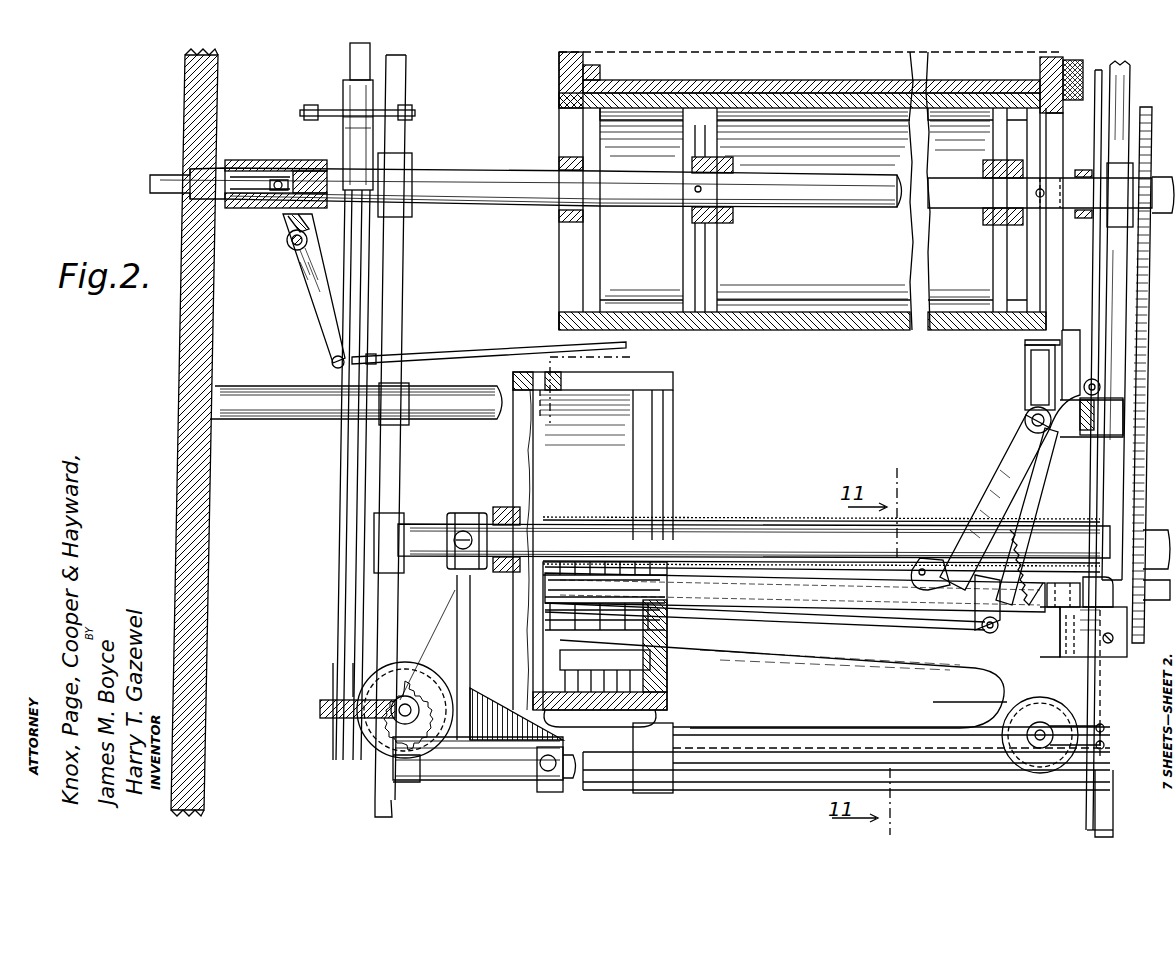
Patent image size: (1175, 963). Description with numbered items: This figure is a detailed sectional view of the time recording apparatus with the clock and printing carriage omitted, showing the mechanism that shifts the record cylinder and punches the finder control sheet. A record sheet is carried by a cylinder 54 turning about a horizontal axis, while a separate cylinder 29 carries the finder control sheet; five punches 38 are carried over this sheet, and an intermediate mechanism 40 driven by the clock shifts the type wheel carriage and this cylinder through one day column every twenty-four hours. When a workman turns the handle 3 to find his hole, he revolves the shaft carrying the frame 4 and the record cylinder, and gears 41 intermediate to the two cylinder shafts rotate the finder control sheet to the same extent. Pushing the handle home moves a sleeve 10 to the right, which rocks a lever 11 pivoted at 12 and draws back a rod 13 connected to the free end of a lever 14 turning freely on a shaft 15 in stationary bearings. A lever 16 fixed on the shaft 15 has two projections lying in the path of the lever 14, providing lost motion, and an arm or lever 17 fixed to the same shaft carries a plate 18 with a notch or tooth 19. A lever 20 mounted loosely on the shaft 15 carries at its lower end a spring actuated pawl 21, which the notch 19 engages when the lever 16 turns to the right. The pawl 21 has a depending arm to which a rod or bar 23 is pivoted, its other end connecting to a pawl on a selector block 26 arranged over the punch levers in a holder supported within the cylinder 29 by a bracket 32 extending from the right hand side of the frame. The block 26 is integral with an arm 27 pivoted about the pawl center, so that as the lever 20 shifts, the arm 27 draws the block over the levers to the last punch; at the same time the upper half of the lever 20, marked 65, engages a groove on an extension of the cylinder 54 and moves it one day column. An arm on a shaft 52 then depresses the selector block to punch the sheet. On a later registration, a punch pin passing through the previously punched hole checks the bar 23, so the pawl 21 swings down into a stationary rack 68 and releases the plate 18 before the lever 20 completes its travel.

The handle 3 is at (283, 147).
The frame 4 is at (743, 357).
The sleeve 10 is at (265, 212).
The lever 11 is at (305, 295).
The pivot 12 is at (287, 246).
The rod 13 is at (497, 352).
The lever 14 is at (1030, 370).
The shaft 15 is at (1025, 418).
The lever 16 is at (1025, 343).
The arm or lever 17 is at (1005, 456).
The plate 18 is at (940, 548).
The notch or tooth 19 is at (980, 628).
The lever 20 is at (1043, 478).
The spring actuated pawl 21 is at (1052, 555).
The rod or bar 23 is at (935, 620).
The selector block 26 is at (1040, 610).
The arm 27 is at (832, 606).
The cylinder 29 is at (662, 380).
The bracket 32 is at (778, 654).
The punches 38 is at (648, 680).
The intermediate mechanism 40 is at (415, 113).
The gears 41 is at (1151, 238).
The shaft 52 is at (748, 583).
The cylinder 54 is at (562, 255).
The upper half of lever 65 is at (1082, 300).
The stationary rack 68 is at (1066, 640).